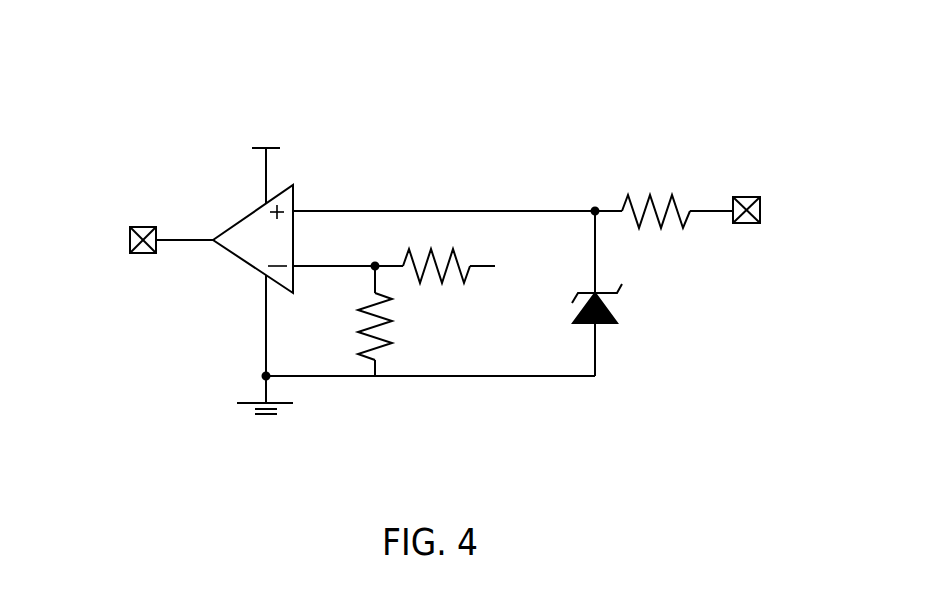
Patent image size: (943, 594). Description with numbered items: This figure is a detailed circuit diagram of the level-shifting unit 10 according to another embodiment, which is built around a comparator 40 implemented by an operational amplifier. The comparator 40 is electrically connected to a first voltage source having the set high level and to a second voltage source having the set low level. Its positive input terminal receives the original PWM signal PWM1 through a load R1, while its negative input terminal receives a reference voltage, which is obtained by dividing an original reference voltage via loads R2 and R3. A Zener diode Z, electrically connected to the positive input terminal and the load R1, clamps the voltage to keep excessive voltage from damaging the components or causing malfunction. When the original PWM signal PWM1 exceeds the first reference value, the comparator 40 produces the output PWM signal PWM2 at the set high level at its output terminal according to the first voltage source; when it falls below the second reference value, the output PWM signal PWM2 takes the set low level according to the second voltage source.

The level-shifting unit 10 is at (176, 30).
The comparator 40 is at (305, 182).
The load R1 is at (642, 189).
The load R2 is at (436, 251).
The load R3 is at (395, 321).
The Zener diode Z is at (608, 305).
The original PWM signal PWM1 is at (766, 211).
The output PWM signal PWM2 is at (121, 239).